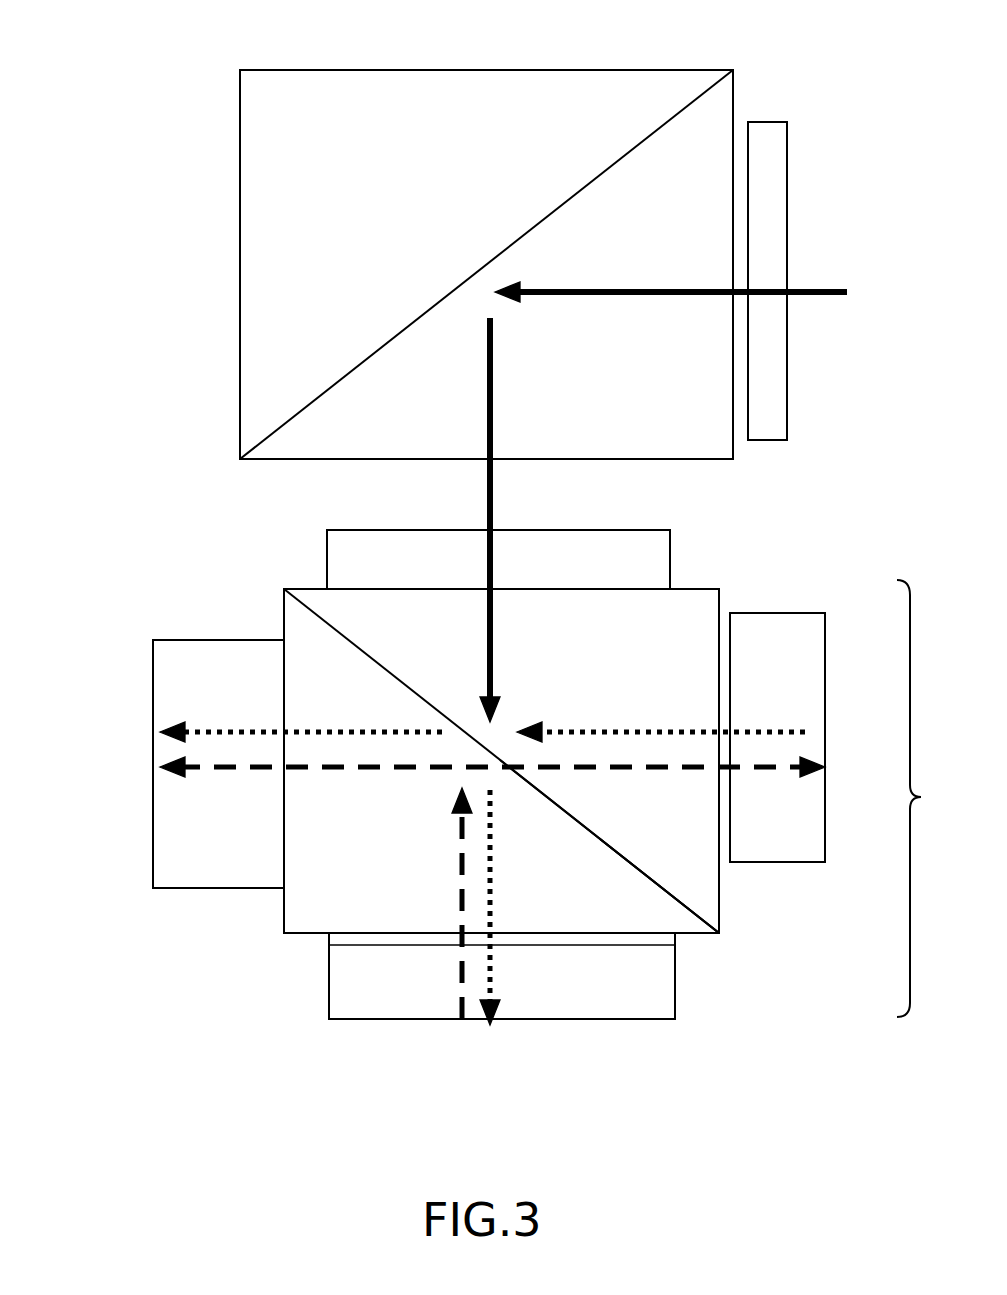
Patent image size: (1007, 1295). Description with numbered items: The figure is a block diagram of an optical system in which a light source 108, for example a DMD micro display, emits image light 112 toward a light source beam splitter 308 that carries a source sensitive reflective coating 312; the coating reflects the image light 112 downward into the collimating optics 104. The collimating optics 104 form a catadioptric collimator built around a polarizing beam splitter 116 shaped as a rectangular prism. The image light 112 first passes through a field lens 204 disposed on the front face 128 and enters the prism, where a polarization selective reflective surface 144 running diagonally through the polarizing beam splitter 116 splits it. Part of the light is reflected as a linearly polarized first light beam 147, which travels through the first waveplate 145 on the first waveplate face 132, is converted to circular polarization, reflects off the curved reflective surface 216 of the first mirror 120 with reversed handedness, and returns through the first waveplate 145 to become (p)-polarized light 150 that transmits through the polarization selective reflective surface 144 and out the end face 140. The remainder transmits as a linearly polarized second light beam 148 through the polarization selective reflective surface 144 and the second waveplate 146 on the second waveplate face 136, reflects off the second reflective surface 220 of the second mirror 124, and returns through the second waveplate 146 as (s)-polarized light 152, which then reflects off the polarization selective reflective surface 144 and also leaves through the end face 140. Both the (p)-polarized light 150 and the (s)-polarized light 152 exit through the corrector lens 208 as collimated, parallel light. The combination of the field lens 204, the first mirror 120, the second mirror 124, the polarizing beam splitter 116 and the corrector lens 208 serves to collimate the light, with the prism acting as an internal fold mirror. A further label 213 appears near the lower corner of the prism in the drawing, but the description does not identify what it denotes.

The collimating optics 104 is at (931, 798).
The light source 108 is at (787, 193).
The image light 112 is at (652, 290).
The polarizing beam splitter 116 is at (280, 582).
The first mirror 120 is at (818, 808).
The second mirror 124 is at (373, 998).
The front face 128 is at (322, 588).
The first waveplate face 132 is at (720, 600).
The second waveplate face 136 is at (307, 933).
The end face 140 is at (283, 912).
The polarization selective reflective surface 144 is at (313, 613).
The first waveplate 145 is at (730, 835).
The second waveplate 146 is at (362, 945).
The first light beam 147 is at (686, 775).
The second light beam 148 is at (495, 885).
The (p)-polarized light 150 is at (145, 716).
The (s)-polarized light 152 is at (145, 783).
The field lens 204 is at (670, 560).
The corrector lens 208 is at (158, 843).
The lower corner region 213 is at (675, 930).
The curved reflective surface 216 is at (825, 665).
The second reflective surface 220 is at (592, 1020).
The light source beam splitter 308 is at (312, 70).
The source sensitive reflective coating 312 is at (370, 355).